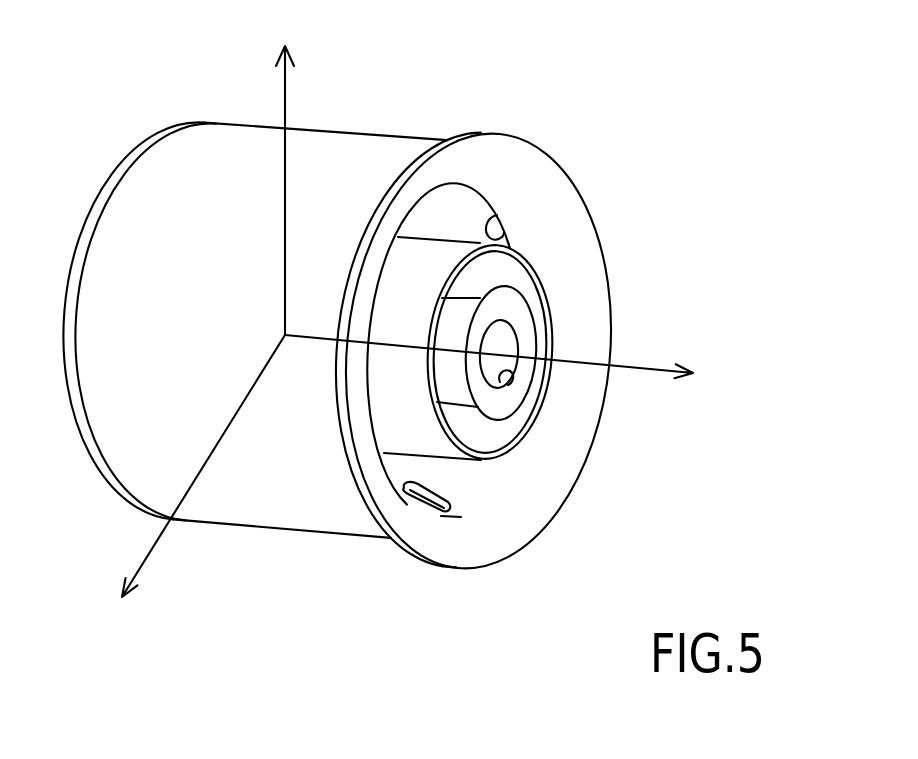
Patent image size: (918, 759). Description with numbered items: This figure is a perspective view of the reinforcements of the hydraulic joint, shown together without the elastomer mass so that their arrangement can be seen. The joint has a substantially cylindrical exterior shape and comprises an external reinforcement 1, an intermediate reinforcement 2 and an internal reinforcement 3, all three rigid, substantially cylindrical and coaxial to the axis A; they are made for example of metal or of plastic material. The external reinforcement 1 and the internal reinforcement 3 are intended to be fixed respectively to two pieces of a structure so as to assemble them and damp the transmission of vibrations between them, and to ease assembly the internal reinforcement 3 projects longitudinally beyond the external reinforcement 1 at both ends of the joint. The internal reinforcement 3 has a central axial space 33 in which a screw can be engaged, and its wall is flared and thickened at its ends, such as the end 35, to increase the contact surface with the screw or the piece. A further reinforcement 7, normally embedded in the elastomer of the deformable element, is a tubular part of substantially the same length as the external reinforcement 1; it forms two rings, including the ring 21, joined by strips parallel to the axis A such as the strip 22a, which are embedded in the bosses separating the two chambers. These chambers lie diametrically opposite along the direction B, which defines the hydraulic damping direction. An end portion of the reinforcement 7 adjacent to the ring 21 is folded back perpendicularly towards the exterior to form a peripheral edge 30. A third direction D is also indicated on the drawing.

The external reinforcement 1 is at (349, 128).
The intermediate reinforcement 2 is at (463, 228).
The internal reinforcement 3 is at (479, 292).
The reinforcement 7 is at (600, 466).
The ring 21 is at (503, 214).
The strip 22a is at (421, 487).
The peripheral edge 30 is at (435, 138).
The central axial space 33 is at (514, 375).
The end 35 is at (541, 271).
The axis A is at (648, 366).
The direction B is at (150, 552).
The axis D is at (283, 92).